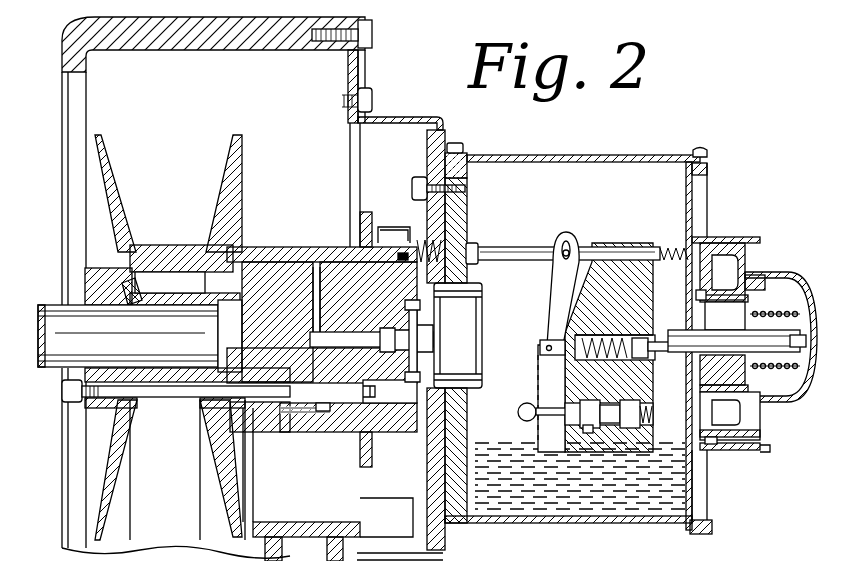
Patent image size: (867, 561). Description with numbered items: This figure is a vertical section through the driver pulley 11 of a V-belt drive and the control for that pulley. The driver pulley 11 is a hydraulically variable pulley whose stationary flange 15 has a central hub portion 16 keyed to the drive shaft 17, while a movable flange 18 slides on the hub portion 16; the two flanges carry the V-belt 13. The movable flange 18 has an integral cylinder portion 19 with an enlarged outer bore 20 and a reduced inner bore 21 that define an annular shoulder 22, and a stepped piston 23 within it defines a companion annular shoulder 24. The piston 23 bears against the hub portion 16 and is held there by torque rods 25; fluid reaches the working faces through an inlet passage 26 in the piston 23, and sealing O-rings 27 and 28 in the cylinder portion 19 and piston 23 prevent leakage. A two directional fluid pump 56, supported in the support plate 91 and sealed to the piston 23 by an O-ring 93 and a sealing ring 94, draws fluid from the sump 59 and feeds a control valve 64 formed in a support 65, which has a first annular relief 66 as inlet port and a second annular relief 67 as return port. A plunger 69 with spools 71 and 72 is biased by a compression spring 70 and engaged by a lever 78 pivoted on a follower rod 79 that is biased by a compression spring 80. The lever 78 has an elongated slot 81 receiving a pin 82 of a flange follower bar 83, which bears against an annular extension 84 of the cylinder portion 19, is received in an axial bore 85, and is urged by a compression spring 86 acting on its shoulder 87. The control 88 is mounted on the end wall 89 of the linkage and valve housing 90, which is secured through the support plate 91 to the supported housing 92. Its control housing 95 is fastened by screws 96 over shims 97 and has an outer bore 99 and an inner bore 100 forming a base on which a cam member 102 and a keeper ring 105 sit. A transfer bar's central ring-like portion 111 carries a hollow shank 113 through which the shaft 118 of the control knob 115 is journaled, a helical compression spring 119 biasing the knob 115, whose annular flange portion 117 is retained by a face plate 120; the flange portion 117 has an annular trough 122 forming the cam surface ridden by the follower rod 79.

The driver pulley 11 is at (154, 153).
The V-belt 13 is at (170, 245).
The stationary flange 15 is at (112, 189).
The hub portion 16 is at (160, 383).
The drive shaft 17 is at (55, 318).
The movable flange 18 is at (226, 181).
The cylinder portion 19 is at (296, 426).
The outer bore 20 is at (338, 250).
The inner bore 21 is at (272, 262).
The annular shoulder 22 is at (322, 428).
The piston 23 is at (291, 262).
The annular shoulder 24 is at (307, 262).
The torque rods 25 is at (178, 398).
The inlet passage 26 is at (310, 308).
The sealing O-ring 27 is at (405, 428).
The sealing O-ring 28 is at (258, 247).
The two directional fluid pump 56 is at (465, 331).
The sump 59 is at (523, 498).
The control valve 64 is at (595, 440).
The support 65 is at (625, 245).
The first annular relief 66 is at (585, 433).
The second annular relief 67 is at (630, 430).
The plunger 69 is at (600, 430).
The compression spring 70 is at (645, 405).
The spool 71 is at (563, 394).
The spool 72 is at (638, 395).
The lever 78 is at (547, 309).
The follower rod 79 is at (650, 345).
The compression spring 80 is at (548, 339).
The elongated slot 81 is at (572, 240).
The pin 82 is at (578, 254).
The flange follower bar 83 is at (513, 246).
The annular extension 84 is at (362, 465).
The axial bore 85 is at (642, 248).
The compression spring 86 is at (422, 240).
The shoulder 87 is at (392, 228).
The control 88 is at (777, 247).
The end wall 89 is at (697, 190).
The linkage and valve housing 90 is at (592, 149).
The support plate 91 is at (467, 204).
The supported housing 92 is at (75, 24).
The O-ring 93 is at (386, 372).
The sealing ring 94 is at (418, 306).
The control housing 95 is at (742, 456).
The screws 96 is at (724, 240).
The shims 97 is at (692, 456).
The outer bore 99 is at (758, 265).
The inner bore 100 is at (705, 306).
The cam member 102 is at (742, 299).
The keeper ring 105 is at (750, 379).
The central ring-like portion 111 is at (748, 318).
The hollow shank 113 is at (728, 352).
The control knob 115 is at (776, 385).
The annular flange portion 117 is at (752, 283).
The shaft 118 is at (737, 341).
The helical compression spring 119 is at (798, 300).
The face plate 120 is at (762, 428).
The annular trough 122 is at (722, 437).